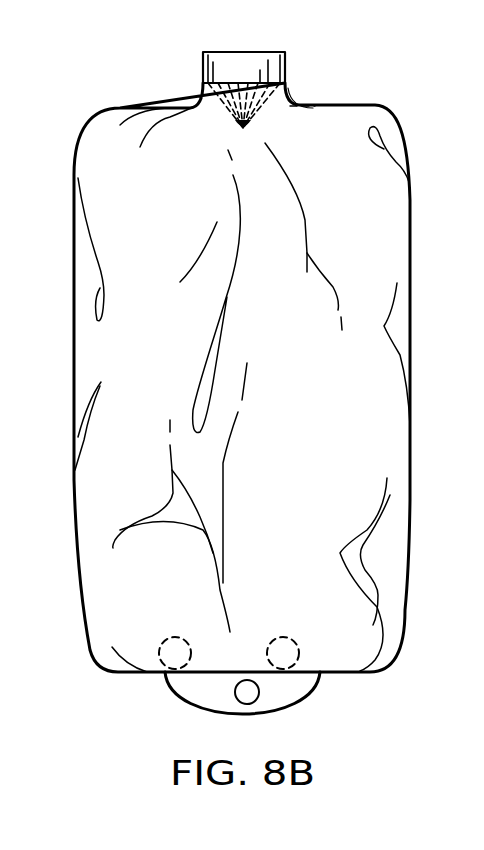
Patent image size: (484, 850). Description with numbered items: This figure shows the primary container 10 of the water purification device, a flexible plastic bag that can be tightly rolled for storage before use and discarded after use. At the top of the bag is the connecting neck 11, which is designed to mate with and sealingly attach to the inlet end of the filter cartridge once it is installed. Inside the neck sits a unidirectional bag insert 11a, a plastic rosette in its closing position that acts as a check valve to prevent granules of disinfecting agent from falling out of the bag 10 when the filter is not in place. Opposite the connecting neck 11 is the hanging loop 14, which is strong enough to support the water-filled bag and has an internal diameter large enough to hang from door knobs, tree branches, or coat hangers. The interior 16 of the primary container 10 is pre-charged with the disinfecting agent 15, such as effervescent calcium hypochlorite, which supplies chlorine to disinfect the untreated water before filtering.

The primary container 10 is at (120, 108).
The connecting neck 11 is at (203, 50).
The unidirectional bag insert 11a is at (210, 110).
The hanging loop 14 is at (256, 698).
The disinfecting agent 15 is at (188, 641).
The interior 16 is at (78, 560).